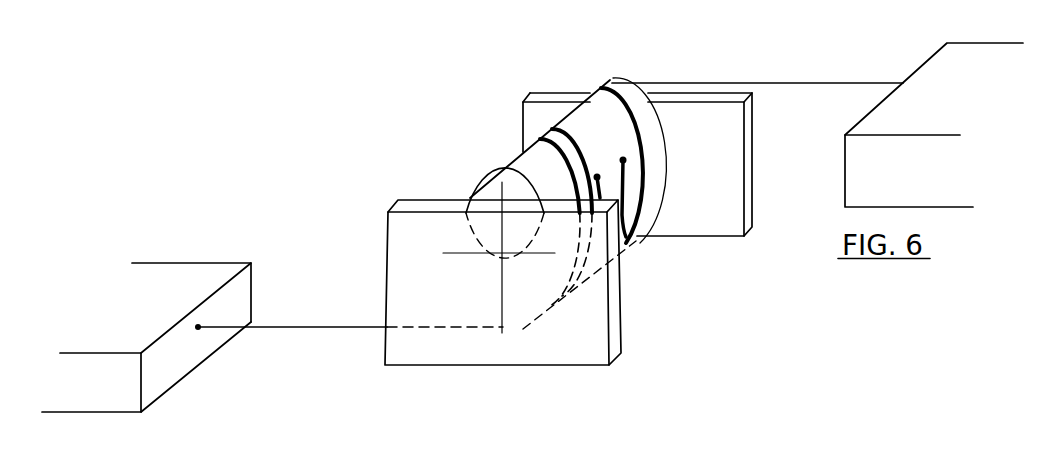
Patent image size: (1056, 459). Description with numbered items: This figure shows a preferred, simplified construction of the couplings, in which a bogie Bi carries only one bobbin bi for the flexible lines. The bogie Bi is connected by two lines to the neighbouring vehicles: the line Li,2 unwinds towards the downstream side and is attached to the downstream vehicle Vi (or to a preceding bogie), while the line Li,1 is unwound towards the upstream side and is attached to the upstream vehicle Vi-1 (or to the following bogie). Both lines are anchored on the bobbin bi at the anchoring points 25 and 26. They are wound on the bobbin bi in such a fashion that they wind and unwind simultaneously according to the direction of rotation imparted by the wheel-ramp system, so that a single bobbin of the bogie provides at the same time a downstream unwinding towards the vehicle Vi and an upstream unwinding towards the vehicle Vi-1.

The upstream vehicle Vi-1 is at (147, 275).
The line Li,1 is at (280, 328).
The bogie Bi is at (421, 186).
The bobbin bi is at (593, 113).
The anchoring point 25 is at (623, 160).
The anchoring point 26 is at (597, 177).
The line Li,2 is at (790, 82).
The downstream vehicle Vi is at (963, 52).